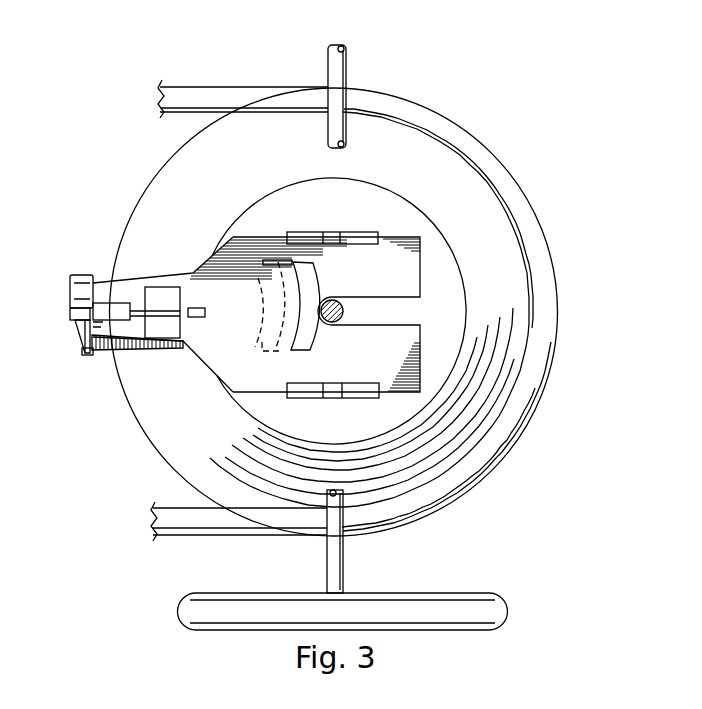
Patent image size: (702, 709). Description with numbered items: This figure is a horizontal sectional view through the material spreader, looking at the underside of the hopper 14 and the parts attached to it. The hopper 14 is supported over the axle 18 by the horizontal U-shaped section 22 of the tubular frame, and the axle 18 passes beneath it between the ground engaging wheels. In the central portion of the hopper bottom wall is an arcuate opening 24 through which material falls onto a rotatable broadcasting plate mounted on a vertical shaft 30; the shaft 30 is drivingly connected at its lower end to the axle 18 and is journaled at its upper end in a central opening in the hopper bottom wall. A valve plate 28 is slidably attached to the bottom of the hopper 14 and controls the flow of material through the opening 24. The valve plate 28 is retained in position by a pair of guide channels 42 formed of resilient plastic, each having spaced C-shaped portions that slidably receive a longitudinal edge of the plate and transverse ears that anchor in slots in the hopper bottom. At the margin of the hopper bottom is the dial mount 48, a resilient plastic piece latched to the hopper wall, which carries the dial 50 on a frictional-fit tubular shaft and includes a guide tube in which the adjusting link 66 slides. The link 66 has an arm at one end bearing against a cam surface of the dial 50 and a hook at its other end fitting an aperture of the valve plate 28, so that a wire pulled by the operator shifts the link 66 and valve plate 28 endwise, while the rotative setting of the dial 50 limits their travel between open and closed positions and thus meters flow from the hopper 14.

The hopper 14 is at (150, 201).
The axle 18 is at (343, 72).
The horizontal U-shaped section 22 is at (490, 153).
The arcuate opening 24 is at (262, 343).
The valve plate 28 is at (408, 288).
The vertical shaft 30 is at (345, 311).
The guide channels 42 is at (345, 240).
The dial mount 48 is at (133, 295).
The dial 50 is at (78, 275).
The adjusting link 66 is at (168, 316).